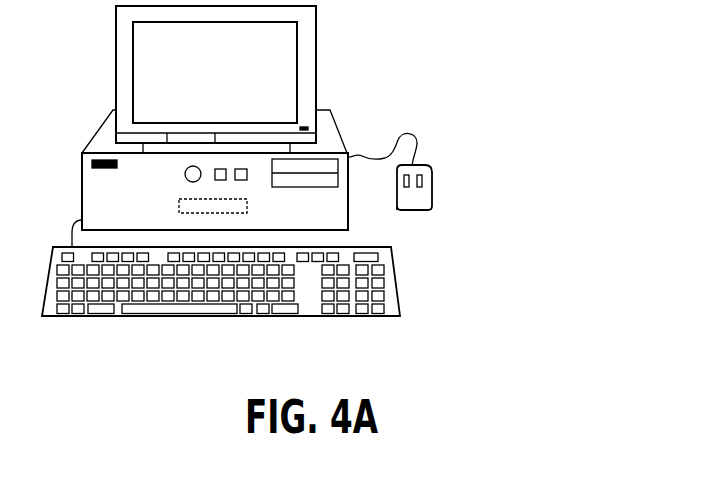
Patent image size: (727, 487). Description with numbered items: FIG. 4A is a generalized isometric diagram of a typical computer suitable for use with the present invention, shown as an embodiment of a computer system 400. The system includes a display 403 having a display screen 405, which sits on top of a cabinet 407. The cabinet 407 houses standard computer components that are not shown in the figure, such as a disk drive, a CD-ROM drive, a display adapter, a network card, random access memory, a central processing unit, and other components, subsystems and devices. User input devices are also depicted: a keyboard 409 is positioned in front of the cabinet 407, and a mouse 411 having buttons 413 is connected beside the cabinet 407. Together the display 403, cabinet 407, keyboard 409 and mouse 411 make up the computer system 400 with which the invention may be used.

The computer system 400 is at (514, 52).
The display 403 is at (314, 68).
The display screen 405 is at (288, 38).
The cabinet 407 is at (334, 123).
The keyboard 409 is at (108, 317).
The mouse 411 is at (430, 203).
The buttons 413 is at (427, 172).